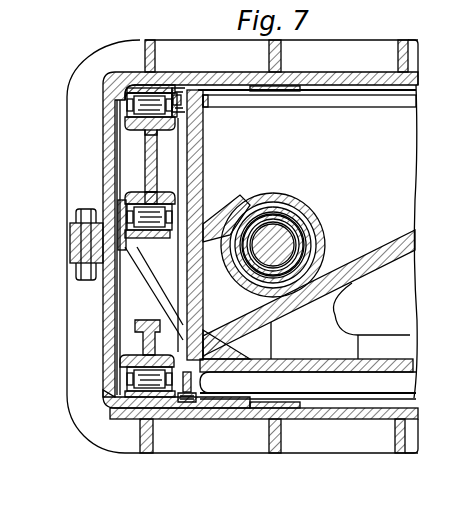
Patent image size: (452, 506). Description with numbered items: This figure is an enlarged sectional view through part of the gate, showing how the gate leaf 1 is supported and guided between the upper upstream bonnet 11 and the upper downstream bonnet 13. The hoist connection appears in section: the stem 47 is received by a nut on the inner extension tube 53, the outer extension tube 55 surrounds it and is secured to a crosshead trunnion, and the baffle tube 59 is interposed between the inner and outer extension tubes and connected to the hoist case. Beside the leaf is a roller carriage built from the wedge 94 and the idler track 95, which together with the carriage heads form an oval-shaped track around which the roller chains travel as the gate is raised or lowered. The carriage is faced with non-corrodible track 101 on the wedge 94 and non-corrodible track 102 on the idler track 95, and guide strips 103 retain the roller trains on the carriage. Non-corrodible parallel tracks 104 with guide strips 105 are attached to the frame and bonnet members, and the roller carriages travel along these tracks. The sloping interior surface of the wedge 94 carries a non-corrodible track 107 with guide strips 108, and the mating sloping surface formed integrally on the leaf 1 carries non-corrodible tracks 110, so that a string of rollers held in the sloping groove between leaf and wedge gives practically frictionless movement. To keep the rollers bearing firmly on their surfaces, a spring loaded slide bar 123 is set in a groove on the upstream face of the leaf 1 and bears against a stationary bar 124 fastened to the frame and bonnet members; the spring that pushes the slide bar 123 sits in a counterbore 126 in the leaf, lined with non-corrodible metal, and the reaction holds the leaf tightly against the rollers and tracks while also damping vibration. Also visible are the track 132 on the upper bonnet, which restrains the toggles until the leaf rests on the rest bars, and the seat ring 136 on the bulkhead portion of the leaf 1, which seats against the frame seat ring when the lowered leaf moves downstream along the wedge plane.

The leaf 1 is at (204, 165).
The upper upstream bonnet 11 is at (275, 440).
The upper downstream bonnet 13 is at (352, 50).
The stem 47 is at (240, 204).
The inner extension tube 53 is at (262, 243).
The outer extension tube 55 is at (309, 230).
The baffle tube 59 is at (303, 222).
The wedge 94 is at (112, 165).
The idler track 95 is at (140, 335).
The non-corrodible track 101 is at (140, 122).
The non-corrodible track 102 is at (135, 362).
The guide strip 103 is at (128, 107).
The non-corrodible parallel track 104 is at (138, 90).
The guide strip 105 is at (128, 95).
The non-corrodible track 107 is at (140, 197).
The guide strip 108 is at (125, 213).
The non-corrodible track 110 is at (88, 236).
The slide bar 123 is at (202, 392).
The stationary bar 124 is at (190, 404).
The counterbore 126 is at (180, 394).
The track 132 is at (272, 92).
The seat ring 136 is at (192, 90).